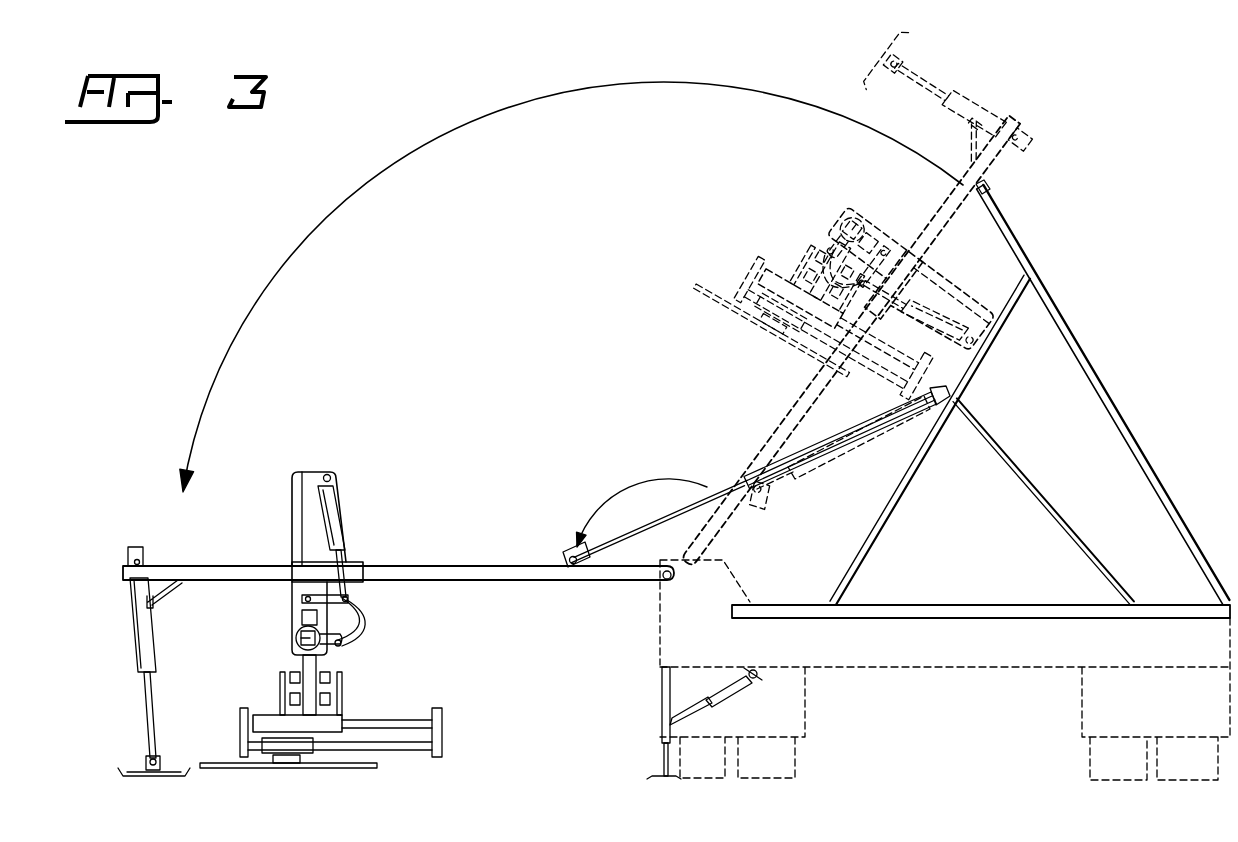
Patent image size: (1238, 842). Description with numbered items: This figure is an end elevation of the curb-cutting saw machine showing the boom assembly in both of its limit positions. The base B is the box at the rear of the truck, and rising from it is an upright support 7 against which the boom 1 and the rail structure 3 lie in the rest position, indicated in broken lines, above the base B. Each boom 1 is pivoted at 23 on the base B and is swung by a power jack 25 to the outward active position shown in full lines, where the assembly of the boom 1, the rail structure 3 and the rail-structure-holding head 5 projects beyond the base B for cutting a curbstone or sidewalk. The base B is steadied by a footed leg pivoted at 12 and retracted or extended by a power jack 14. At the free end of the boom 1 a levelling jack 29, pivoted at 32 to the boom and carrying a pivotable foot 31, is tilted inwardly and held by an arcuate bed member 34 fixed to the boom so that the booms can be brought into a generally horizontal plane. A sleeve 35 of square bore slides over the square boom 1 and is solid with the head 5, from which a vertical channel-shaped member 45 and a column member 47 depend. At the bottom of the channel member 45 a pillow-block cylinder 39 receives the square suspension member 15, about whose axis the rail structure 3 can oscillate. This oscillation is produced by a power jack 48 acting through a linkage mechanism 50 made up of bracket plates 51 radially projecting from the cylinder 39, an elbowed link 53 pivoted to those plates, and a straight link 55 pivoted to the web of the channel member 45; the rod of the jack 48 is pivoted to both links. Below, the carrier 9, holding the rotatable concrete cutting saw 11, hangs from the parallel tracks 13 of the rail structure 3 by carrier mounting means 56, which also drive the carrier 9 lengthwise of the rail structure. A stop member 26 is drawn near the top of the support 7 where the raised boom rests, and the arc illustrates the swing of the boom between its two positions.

The boom 1 is at (443, 570).
The rail structure 3 is at (312, 664).
The rail-structure-holding head 5 is at (336, 474).
The upright support 7 is at (1060, 313).
The carrier 9 is at (410, 716).
The cutting saw 11 is at (360, 765).
The leg pivot 12 is at (658, 694).
The tracks 13 is at (280, 686).
The power jack 14 is at (725, 695).
The suspension member 15 is at (296, 641).
The boom pivot 23 is at (662, 580).
The power jack 25 is at (793, 480).
The beam rest 26 is at (990, 108).
The levelling jack 29 is at (138, 630).
The pivotable foot 31 is at (172, 768).
The levelling jack pivot 32 is at (138, 565).
The arcuate bed member 34 is at (152, 596).
The sleeve 35 is at (355, 560).
The pillow-block cylinder 39 is at (296, 634).
The channel-shaped member 45 is at (302, 608).
The column member 47 is at (298, 516).
The power jack 48 is at (335, 512).
The linkage mechanism 50 is at (364, 601).
The bracket plates 51 is at (342, 648).
The elbowed link 53 is at (372, 620).
The straight link 55 is at (302, 598).
The carrier mounting means 56 is at (350, 698).
The base B is at (920, 603).